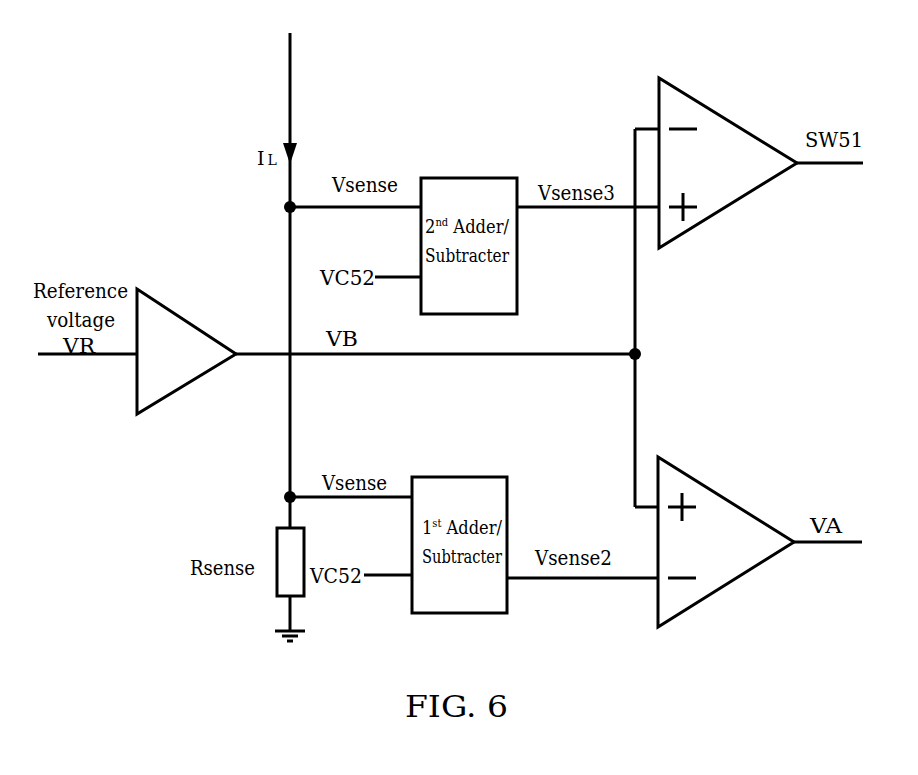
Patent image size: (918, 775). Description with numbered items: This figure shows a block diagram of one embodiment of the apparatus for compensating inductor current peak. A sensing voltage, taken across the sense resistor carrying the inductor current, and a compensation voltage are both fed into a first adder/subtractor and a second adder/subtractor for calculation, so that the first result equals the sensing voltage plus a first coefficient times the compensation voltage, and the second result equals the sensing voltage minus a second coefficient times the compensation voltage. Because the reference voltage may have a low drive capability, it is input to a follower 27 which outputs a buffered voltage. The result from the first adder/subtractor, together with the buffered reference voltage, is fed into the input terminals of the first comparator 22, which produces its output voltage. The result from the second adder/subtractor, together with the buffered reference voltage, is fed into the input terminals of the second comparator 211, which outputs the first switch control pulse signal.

The follower 27 is at (178, 313).
The second comparator 211 is at (720, 120).
The first comparator 22 is at (738, 505).